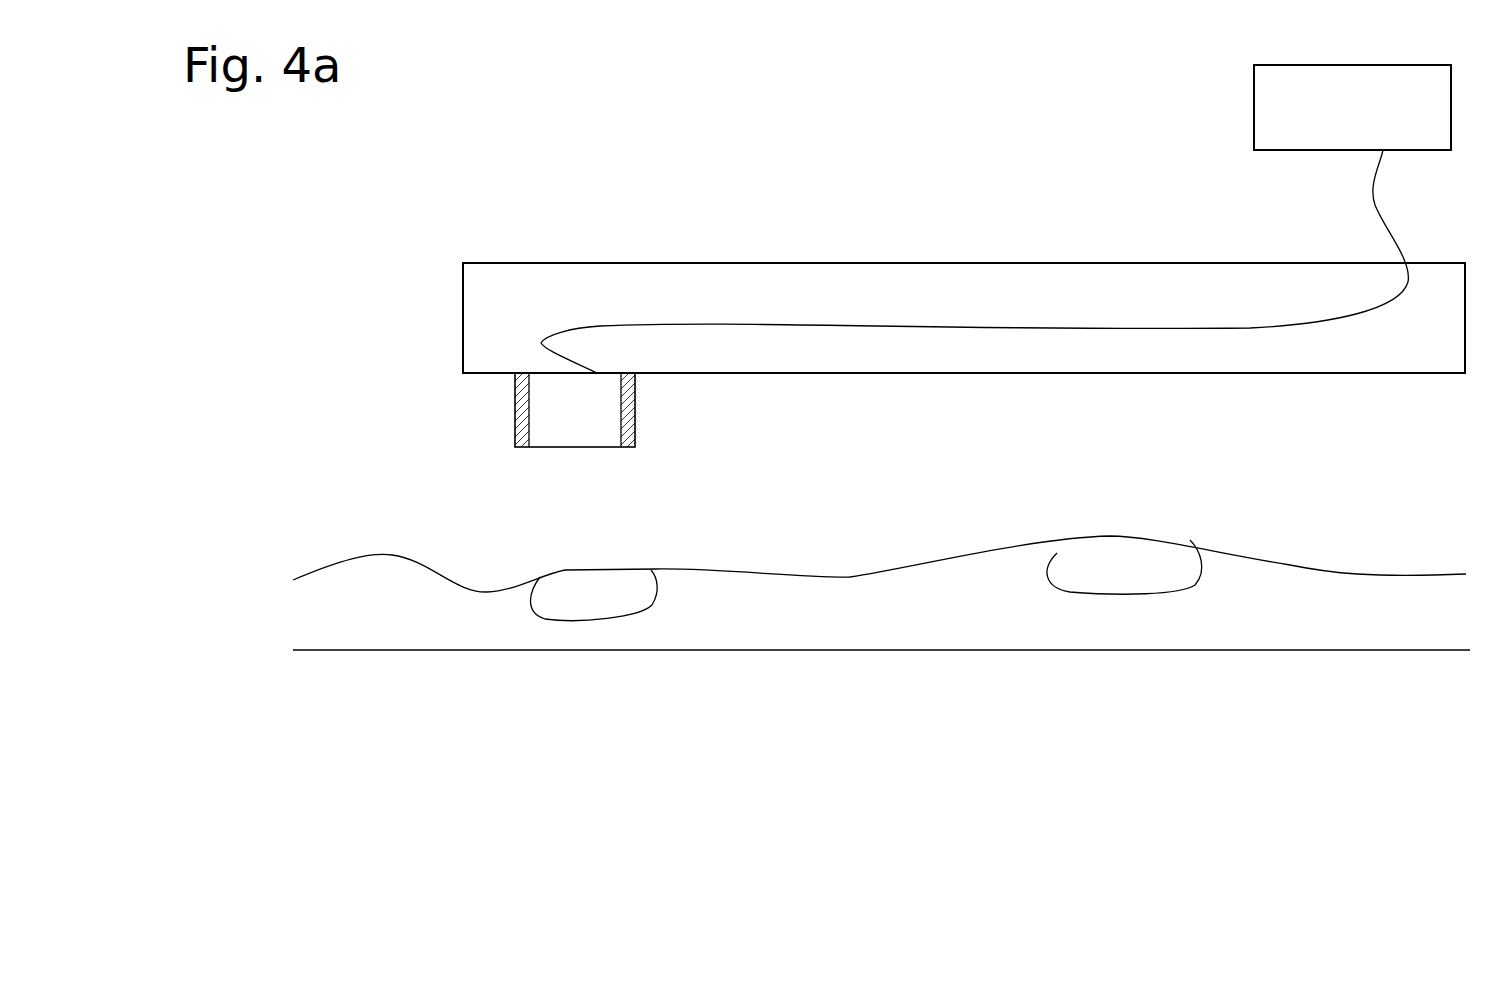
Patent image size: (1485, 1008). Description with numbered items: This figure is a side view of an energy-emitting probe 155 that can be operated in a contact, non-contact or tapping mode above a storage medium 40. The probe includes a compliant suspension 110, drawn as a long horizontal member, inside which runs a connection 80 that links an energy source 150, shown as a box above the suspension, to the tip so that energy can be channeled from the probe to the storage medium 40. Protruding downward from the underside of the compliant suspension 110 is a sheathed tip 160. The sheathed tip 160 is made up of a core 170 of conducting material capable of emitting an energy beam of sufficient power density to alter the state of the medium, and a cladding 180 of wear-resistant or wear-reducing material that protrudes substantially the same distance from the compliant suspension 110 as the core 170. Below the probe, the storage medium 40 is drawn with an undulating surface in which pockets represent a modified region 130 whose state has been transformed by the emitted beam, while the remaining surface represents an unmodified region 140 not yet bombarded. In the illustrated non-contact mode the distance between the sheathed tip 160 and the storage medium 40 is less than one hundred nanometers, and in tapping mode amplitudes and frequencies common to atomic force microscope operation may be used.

The energy-emitting probe 155 is at (424, 289).
The compliant suspension 110 is at (581, 283).
The connection 80 is at (940, 320).
The energy source 150 is at (1352, 107).
The core 170 is at (569, 420).
The cladding 180 is at (636, 408).
The sheathed tip 160 is at (625, 468).
The storage medium 40 is at (1243, 600).
The modified region 130 is at (612, 603).
The unmodified region 140 is at (843, 590).